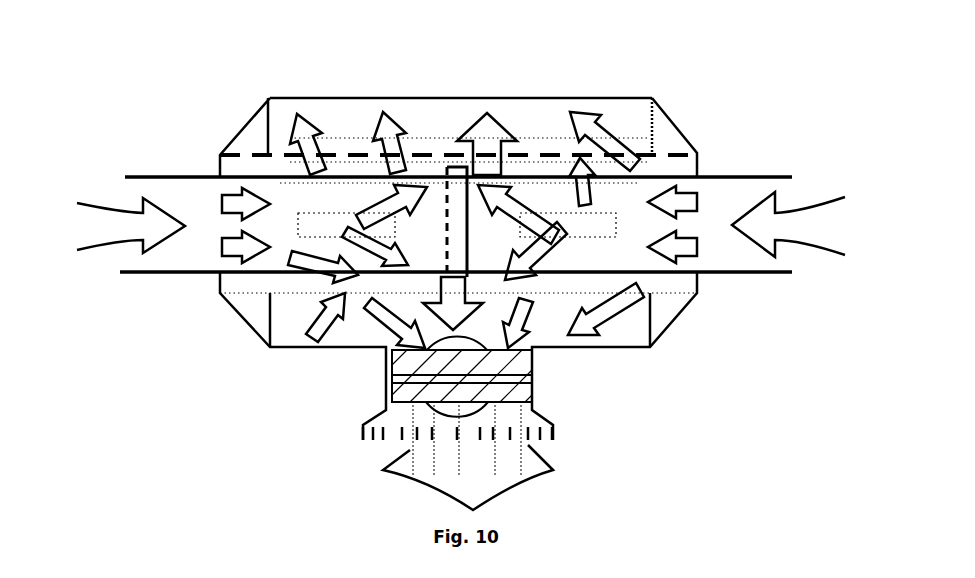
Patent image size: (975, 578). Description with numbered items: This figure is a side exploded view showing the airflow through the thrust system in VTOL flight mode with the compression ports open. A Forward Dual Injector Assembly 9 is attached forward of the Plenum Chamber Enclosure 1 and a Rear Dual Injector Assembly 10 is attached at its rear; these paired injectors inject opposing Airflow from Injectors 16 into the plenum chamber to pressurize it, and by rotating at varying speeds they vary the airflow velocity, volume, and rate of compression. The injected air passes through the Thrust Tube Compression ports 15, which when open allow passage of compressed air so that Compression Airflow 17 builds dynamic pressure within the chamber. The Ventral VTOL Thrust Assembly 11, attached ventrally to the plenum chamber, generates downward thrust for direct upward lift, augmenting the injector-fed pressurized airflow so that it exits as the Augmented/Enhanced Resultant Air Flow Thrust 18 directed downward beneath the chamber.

The Plenum Chamber Enclosure 1 is at (565, 117).
The Forward Dual Injector Assembly 9 is at (787, 172).
The Rear Dual Injector Assembly 10 is at (170, 177).
The Ventral VTOL Thrust Assembly 11 is at (387, 365).
The Thrust Tube Compression ports 15 is at (335, 232).
The Airflow from Injectors 16 is at (267, 195).
The Compression Airflow 17 is at (550, 228).
The Augmented/Enhanced Resultant Air Flow Thrust 18 is at (470, 462).